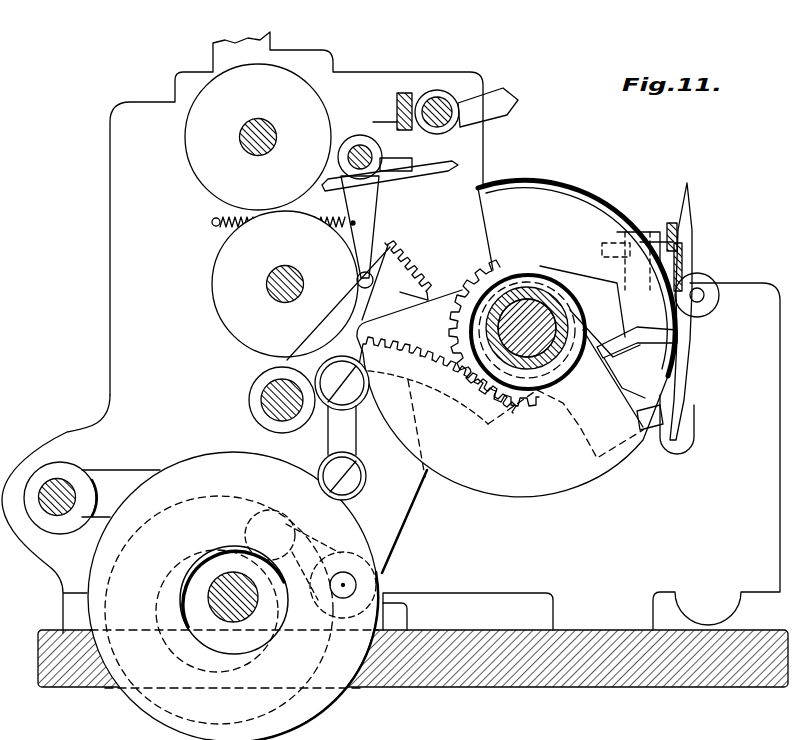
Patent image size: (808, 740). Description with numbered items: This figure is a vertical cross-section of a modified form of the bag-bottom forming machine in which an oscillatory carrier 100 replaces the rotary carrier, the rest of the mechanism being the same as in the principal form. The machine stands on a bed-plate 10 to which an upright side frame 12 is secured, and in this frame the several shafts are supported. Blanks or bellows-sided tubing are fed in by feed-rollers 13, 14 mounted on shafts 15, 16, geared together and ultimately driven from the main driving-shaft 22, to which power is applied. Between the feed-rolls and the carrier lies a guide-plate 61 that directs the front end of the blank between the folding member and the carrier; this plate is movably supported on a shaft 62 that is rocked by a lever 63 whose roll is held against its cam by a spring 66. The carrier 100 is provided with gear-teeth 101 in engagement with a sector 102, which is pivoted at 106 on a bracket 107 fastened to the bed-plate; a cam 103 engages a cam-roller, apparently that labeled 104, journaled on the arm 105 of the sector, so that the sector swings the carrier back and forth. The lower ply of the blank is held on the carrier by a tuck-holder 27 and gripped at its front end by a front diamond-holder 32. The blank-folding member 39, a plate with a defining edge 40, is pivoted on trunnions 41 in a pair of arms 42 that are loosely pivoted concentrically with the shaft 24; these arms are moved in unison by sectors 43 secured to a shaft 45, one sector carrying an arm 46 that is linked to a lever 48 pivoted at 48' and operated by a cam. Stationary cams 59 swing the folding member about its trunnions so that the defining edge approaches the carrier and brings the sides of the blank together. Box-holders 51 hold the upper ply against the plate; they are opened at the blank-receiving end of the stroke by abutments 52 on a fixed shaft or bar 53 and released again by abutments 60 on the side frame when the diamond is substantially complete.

The bed-plate 10 is at (583, 640).
The upright side frame 12 is at (391, 332).
The feed-roller 13 is at (285, 284).
The feed-roller 14 is at (258, 137).
The shaft 15 is at (297, 273).
The shaft 16 is at (272, 132).
The main driving-shaft 22 is at (212, 598).
The shaft 24 is at (542, 303).
The tuck-holder 27 is at (680, 337).
The front diamond-holder 32 is at (650, 430).
The blank-folding member 39 is at (680, 237).
The defining edge 40 is at (691, 300).
The trunnion 41 is at (706, 298).
The arm 42 is at (606, 329).
The sector 43 is at (415, 262).
The shaft 45 is at (262, 404).
The arm 46 is at (322, 372).
The lever 48 is at (92, 498).
The pivot 48' is at (80, 480).
The box-holder 51 is at (685, 255).
The abutment 52 is at (457, 111).
The fixed shaft or bar 53 is at (361, 146).
The stationary cam 59 is at (516, 338).
The abutment 60 is at (690, 402).
The guide-plate 61 is at (420, 170).
The shaft 62 is at (370, 146).
The lever 63 is at (361, 178).
The spring 66 is at (214, 228).
The carrier 100 is at (576, 278).
The gear-teeth 101 is at (455, 322).
The sector 102 is at (437, 374).
The cam 103 is at (226, 503).
The cam groove 104 is at (250, 534).
The arm 105 is at (292, 542).
The pivot 106 is at (358, 586).
The bracket 107 is at (407, 621).